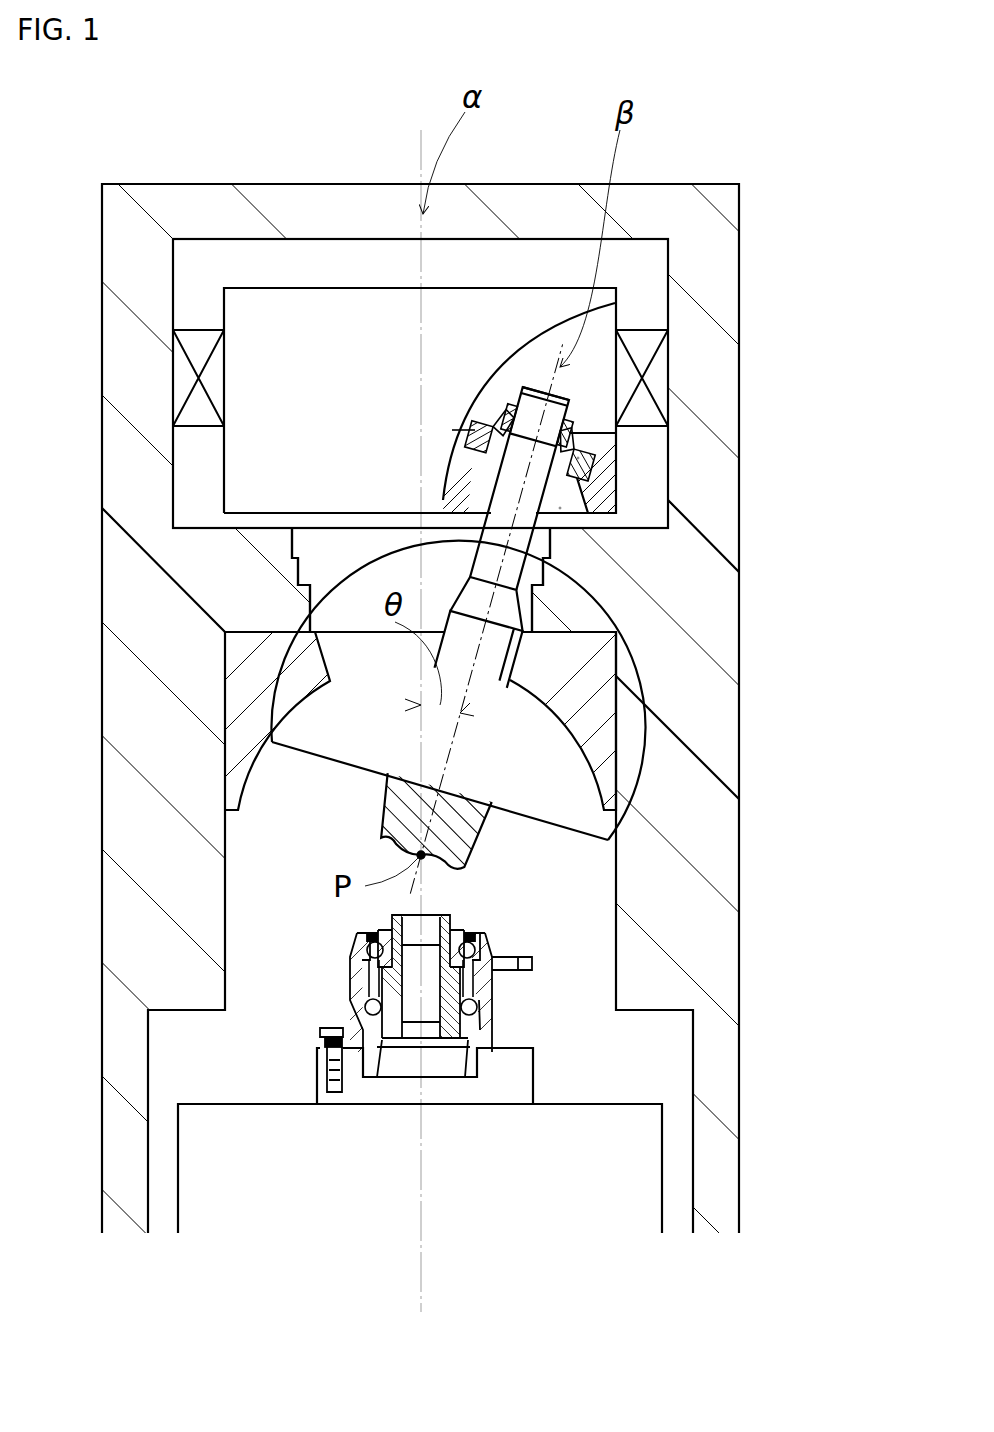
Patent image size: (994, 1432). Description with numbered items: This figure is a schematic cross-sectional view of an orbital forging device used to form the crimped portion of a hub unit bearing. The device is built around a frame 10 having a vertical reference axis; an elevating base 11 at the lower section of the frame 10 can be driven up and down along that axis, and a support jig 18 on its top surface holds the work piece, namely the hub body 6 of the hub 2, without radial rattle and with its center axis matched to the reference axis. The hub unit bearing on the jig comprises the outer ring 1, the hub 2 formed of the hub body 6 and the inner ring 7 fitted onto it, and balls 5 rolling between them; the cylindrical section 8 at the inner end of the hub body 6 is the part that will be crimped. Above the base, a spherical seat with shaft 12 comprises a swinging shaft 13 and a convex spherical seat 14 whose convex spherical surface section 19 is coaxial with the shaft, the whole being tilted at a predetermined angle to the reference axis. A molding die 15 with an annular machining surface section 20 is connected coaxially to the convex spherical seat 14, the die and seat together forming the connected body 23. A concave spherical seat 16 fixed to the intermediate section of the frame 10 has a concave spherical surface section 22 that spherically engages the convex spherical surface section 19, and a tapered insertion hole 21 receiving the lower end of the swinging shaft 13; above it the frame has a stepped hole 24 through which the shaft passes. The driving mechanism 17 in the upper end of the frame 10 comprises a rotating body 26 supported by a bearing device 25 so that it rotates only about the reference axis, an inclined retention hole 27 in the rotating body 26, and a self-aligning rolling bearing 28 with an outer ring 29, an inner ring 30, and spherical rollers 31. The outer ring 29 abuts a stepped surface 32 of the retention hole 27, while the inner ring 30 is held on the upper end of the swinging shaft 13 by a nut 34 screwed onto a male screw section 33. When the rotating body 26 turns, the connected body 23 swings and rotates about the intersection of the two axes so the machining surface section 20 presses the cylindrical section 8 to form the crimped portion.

The outer ring 1 is at (415, 962).
The hub 2 is at (364, 1060).
The balls 5 is at (366, 1000).
The hub body 6 is at (500, 1045).
The inner ring 7 is at (478, 926).
The cylindrical section 8 is at (392, 920).
The frame 10 is at (145, 600).
The elevating base 11 is at (260, 1160).
The spherical seat with shaft 12 is at (525, 660).
The swinging shaft 13 is at (513, 557).
The convex spherical seat 14 is at (383, 727).
The molding die 15 is at (500, 820).
The concave spherical seat 16 is at (262, 690).
The driving mechanism 17 is at (290, 277).
The support jig 18 is at (500, 1082).
The convex spherical surface section 19 is at (590, 762).
The machining surface section 20 is at (397, 838).
The insertion hole 21 is at (305, 640).
The concave spherical surface section 22 is at (545, 735).
The connected body 23 is at (522, 601).
The stepped hole 24 is at (290, 545).
The bearing device 25 is at (195, 380).
The rotating body 26 is at (372, 322).
The retention hole 27 is at (560, 508).
The rolling bearing 28 is at (582, 443).
The outer ring 29 is at (578, 458).
The inner ring 30 is at (487, 480).
The spherical rollers 31 is at (487, 436).
The stepped surface 32 is at (560, 487).
The male screw section 33 is at (522, 392).
The nut 34 is at (497, 423).